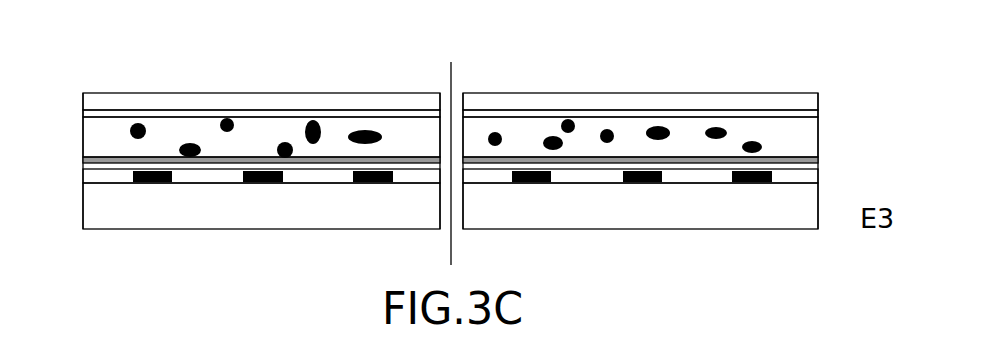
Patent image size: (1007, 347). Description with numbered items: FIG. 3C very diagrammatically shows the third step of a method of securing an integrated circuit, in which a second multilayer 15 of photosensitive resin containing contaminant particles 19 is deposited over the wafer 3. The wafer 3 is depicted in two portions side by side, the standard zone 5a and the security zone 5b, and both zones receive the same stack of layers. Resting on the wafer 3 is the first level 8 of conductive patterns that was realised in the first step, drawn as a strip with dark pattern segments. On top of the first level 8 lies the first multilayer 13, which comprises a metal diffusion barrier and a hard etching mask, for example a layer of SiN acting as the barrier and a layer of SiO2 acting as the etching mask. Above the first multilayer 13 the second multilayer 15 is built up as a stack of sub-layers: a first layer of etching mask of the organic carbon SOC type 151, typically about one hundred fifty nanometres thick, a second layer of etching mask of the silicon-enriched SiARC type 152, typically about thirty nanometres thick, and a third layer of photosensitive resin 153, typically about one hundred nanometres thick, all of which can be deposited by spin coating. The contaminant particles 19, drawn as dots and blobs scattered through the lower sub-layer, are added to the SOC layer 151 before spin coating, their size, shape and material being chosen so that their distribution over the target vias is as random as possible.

The wafer 3 is at (150, 222).
The standard zone 5a is at (703, 242).
The security zone 5b is at (249, 242).
The first level 8 is at (66, 178).
The first multilayer 13 is at (823, 155).
The second multilayer 15 is at (454, 95).
The first layer of etching mask SOC 151 is at (78, 155).
The second layer of etching mask SiARC 152 is at (180, 113).
The third layer of photosensitive resin 153 is at (242, 98).
The contaminant particles 19 is at (310, 126).